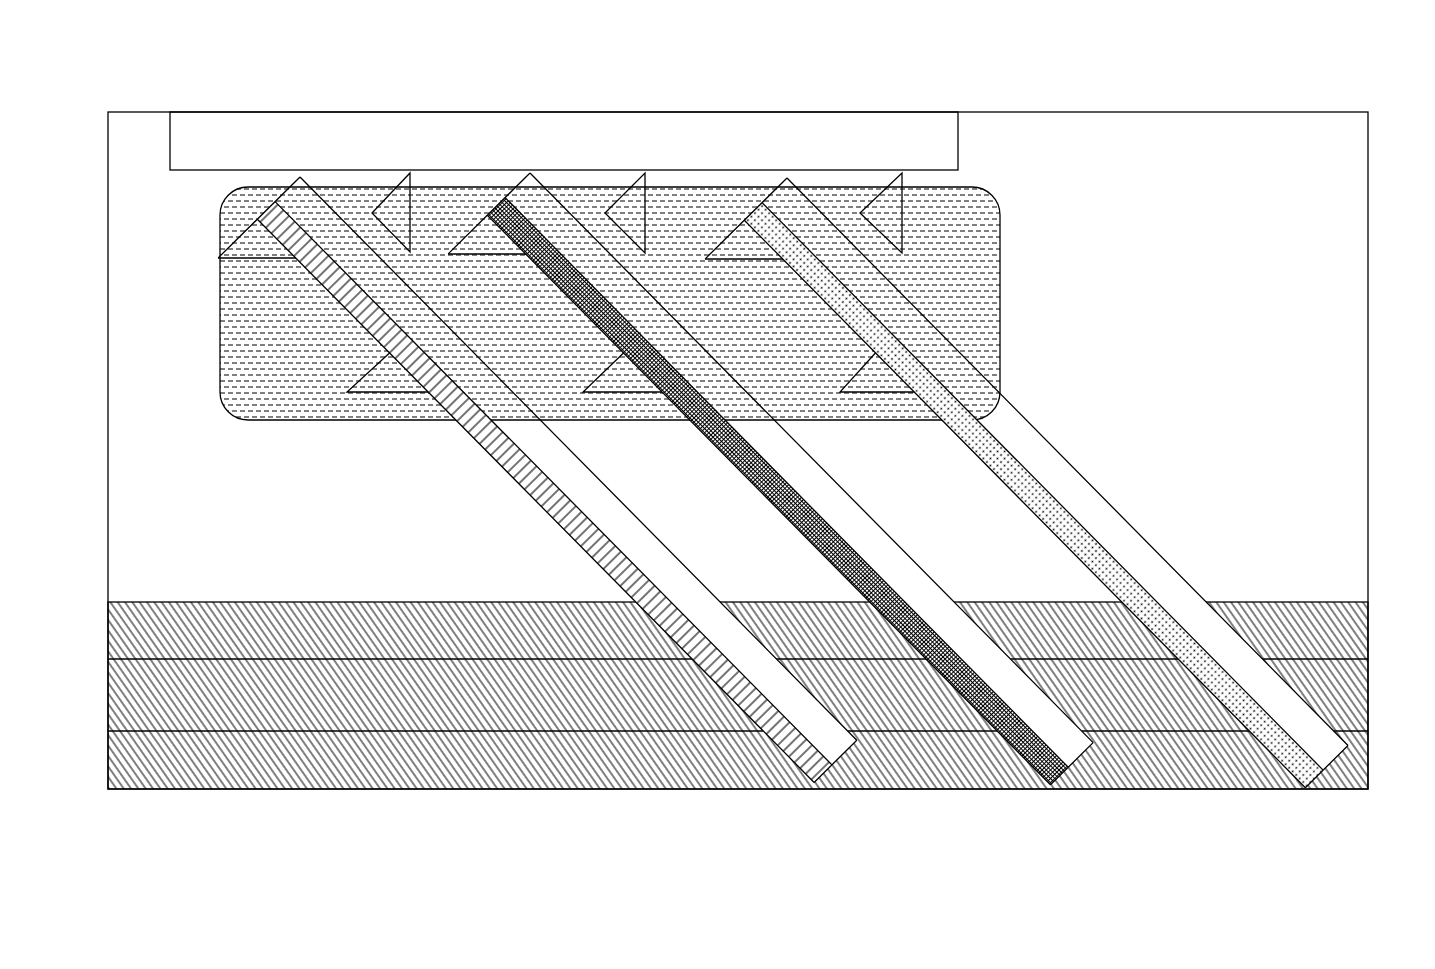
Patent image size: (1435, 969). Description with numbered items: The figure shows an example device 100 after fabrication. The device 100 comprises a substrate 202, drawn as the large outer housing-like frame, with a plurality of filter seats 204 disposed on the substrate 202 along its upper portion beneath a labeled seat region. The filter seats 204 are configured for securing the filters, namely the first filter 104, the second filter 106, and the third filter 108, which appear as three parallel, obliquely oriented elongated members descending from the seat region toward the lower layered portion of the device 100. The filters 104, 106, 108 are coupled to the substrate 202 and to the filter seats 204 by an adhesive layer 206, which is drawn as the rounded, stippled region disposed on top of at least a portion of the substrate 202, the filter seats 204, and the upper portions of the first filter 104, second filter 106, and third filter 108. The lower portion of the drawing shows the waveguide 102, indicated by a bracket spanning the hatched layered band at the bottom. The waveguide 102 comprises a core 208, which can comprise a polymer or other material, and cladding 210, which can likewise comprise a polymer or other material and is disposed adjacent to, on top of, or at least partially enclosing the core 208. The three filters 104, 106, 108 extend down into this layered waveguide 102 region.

The device 100 is at (152, 82).
The waveguide 102 is at (1380, 603).
The first filter 104 is at (736, 583).
The second filter 106 is at (965, 577).
The third filter 108 is at (1218, 573).
The substrate 202 is at (1273, 135).
The filter seats 204 is at (632, 207).
The adhesive layer 206 is at (230, 392).
The core 208 is at (122, 692).
The cladding 210 is at (125, 758).